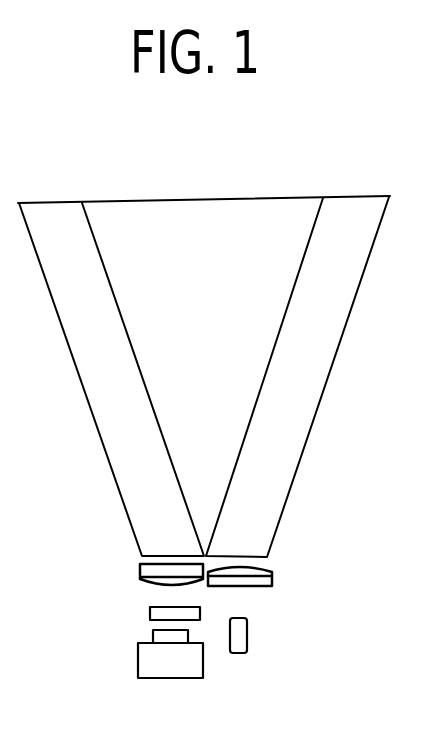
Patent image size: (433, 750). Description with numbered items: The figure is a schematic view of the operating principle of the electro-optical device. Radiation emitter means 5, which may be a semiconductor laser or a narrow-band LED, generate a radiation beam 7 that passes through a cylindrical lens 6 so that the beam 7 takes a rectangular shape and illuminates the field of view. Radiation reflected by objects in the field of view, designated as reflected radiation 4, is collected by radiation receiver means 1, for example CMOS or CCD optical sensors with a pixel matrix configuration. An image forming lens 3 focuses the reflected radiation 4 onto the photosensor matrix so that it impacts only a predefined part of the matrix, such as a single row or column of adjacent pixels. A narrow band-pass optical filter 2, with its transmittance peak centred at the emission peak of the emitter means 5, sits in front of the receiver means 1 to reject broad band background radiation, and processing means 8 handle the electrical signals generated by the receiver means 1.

The radiation receiver means 1 is at (152, 633).
The band-pass optical filter 2 is at (150, 611).
The image forming lens 3 is at (140, 565).
The reflected radiation 4 is at (116, 437).
The radiation emitter means 5 is at (248, 632).
The cylindrical lens 6 is at (272, 575).
The radiation beam 7 is at (293, 436).
The processing means 8 is at (155, 678).